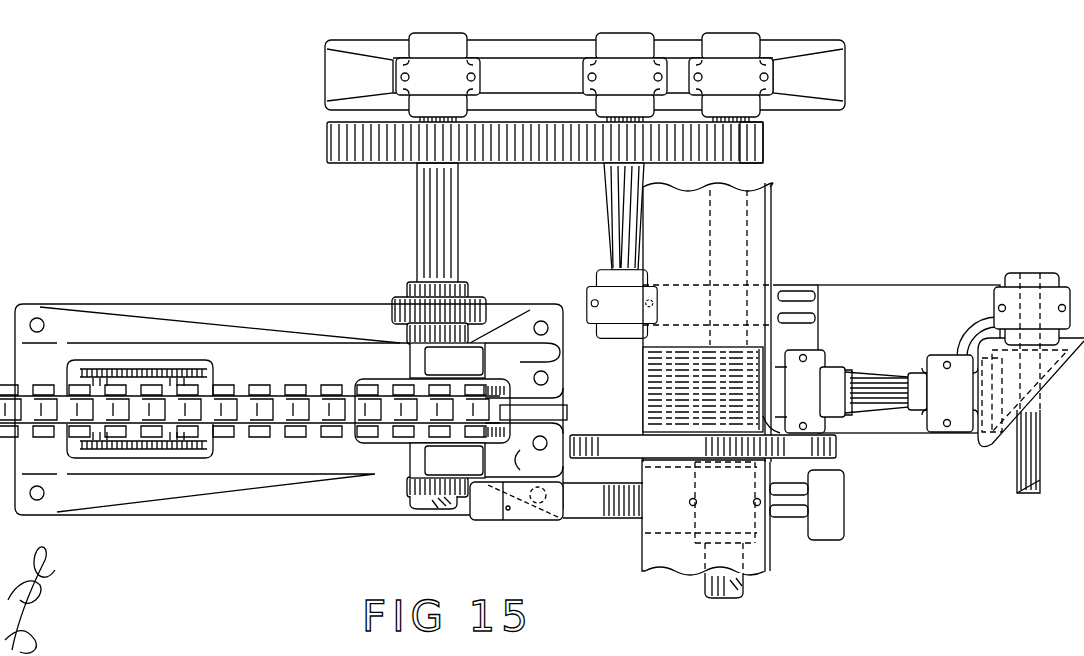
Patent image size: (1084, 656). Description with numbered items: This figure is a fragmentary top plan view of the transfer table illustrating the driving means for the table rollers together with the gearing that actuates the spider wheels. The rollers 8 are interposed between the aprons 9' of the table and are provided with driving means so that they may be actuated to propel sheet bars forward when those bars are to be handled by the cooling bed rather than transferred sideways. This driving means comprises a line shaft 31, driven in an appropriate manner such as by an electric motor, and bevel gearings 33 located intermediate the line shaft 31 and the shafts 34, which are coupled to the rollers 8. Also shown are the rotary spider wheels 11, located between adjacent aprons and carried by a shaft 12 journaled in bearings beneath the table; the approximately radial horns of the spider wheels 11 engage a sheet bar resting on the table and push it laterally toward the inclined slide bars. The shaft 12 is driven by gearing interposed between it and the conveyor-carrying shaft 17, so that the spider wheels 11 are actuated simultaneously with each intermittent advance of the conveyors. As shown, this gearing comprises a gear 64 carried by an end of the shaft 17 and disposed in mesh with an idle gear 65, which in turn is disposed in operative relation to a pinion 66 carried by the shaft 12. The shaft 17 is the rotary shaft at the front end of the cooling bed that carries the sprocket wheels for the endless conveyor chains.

The gear 64 is at (327, 143).
The pinion 66 is at (764, 147).
The idle gear 65 is at (597, 164).
The rotary shaft 17 is at (425, 248).
The aprons 9' is at (722, 379).
The rollers 8 is at (648, 390).
The rotary spider wheels 11 is at (626, 440).
The shaft 12 is at (708, 587).
The shafts 34 is at (878, 380).
The bevel gearings 33 is at (1031, 392).
The line shaft 31 is at (1022, 470).